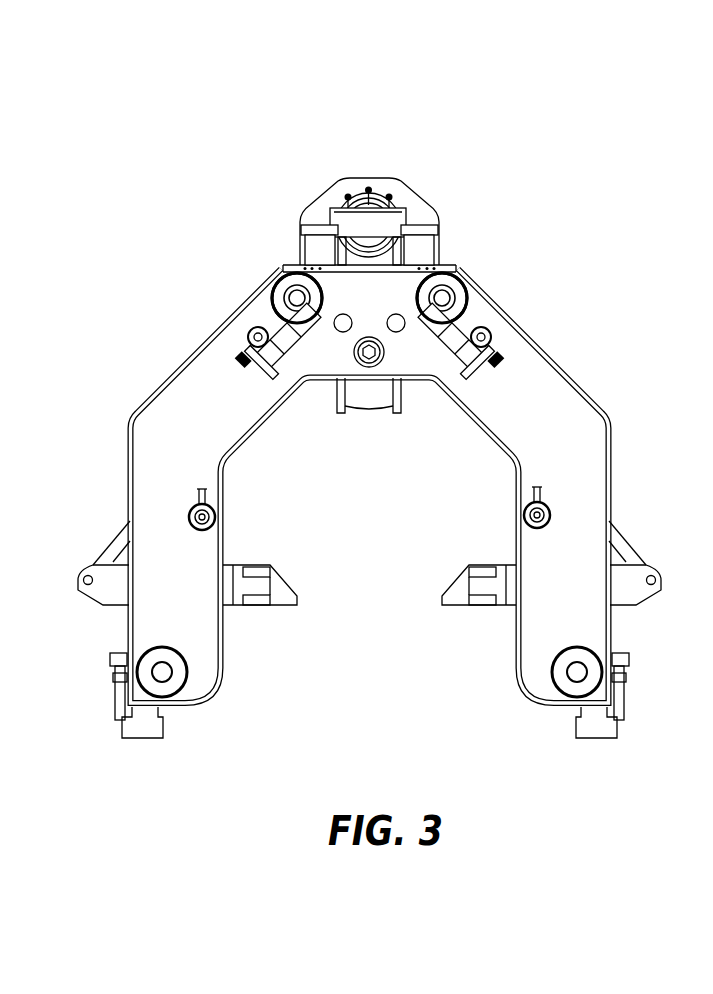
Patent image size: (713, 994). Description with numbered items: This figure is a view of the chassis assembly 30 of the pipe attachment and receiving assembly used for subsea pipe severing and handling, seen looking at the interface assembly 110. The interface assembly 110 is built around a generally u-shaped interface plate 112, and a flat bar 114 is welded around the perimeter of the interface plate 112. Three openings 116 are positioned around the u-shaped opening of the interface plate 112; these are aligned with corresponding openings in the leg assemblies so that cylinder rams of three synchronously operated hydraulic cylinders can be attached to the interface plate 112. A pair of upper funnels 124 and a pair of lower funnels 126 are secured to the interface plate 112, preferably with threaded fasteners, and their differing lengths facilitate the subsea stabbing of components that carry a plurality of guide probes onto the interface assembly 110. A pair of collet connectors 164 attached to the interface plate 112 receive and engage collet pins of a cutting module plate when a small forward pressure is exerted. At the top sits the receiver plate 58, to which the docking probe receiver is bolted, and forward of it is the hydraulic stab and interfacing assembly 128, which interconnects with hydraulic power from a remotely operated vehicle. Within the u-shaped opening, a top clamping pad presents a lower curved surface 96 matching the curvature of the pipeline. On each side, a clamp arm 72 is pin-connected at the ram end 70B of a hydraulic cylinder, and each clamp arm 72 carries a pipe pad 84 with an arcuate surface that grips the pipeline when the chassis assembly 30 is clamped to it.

The chassis assembly 30 is at (414, 106).
The receiver plate 58 is at (412, 181).
The ram end 70B is at (87, 577).
The clamp arm 72 is at (110, 597).
The pipe pad 84 is at (275, 606).
The lower curved surface 96 is at (352, 414).
The interface assembly 110 is at (203, 322).
The interface plate 112 is at (203, 387).
The flat bar 114 is at (126, 458).
The openings 116 is at (382, 356).
The upper funnels 124 is at (281, 272).
The lower funnels 126 is at (172, 690).
The hydraulic stab and interfacing assembly 128 is at (367, 214).
The collet connectors 164 is at (195, 508).